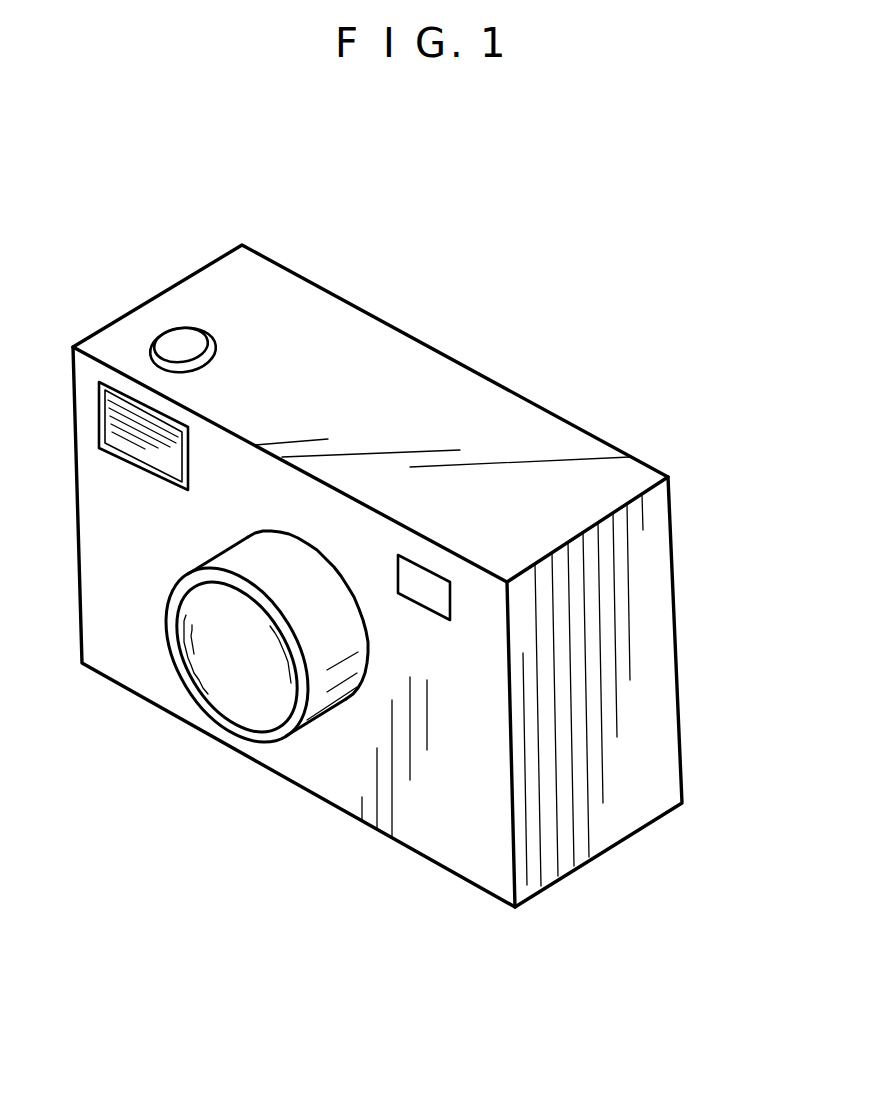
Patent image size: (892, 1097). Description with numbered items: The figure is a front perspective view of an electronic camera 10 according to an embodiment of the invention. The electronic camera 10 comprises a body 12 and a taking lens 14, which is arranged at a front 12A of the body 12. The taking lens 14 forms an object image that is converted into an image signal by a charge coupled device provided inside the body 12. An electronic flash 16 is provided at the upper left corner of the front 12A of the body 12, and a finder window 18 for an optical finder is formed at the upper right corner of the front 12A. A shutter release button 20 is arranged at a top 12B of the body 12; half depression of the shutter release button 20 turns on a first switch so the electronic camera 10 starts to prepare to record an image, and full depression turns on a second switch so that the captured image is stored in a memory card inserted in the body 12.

The electronic camera 10 is at (703, 328).
The body 12 is at (525, 422).
The front of the body 12A is at (140, 682).
The top of the body 12B is at (378, 350).
The taking lens 14 is at (258, 717).
The electronic flash 16 is at (158, 457).
The finder window 18 is at (442, 605).
The shutter release button 20 is at (198, 345).